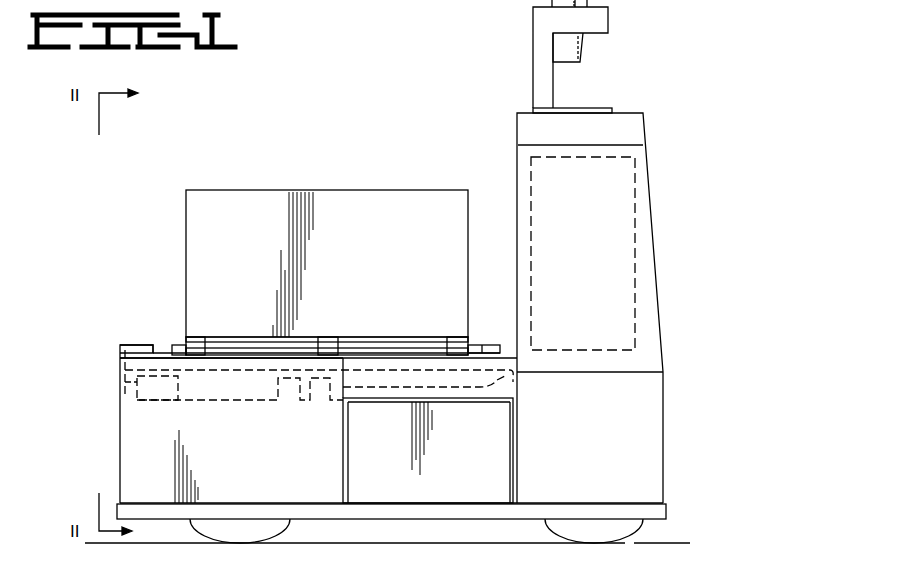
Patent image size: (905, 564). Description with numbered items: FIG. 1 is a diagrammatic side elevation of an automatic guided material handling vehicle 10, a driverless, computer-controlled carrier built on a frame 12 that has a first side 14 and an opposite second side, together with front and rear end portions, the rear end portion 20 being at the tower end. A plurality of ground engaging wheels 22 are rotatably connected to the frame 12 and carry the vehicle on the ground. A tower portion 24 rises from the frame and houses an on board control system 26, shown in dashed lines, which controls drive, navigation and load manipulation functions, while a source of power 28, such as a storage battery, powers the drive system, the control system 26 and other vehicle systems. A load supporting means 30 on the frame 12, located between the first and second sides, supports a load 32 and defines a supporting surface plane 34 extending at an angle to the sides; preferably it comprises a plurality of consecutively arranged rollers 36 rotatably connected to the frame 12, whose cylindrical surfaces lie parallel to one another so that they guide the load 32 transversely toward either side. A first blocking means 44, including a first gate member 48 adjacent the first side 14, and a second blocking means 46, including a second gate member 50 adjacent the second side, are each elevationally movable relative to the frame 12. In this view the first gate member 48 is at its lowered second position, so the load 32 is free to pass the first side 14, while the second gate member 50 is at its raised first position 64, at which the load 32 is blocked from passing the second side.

The material handling vehicle 10 is at (647, 48).
The frame 12 is at (652, 491).
The first side 14 is at (268, 473).
The rear end portion 20 is at (120, 456).
The ground engaging wheels 22 is at (600, 525).
The tower portion 24 is at (647, 233).
The on board control system 26 is at (636, 188).
The source of power 28 is at (392, 459).
The load supporting means 30 is at (141, 348).
The load 32 is at (394, 271).
The supporting surface plane 34 is at (173, 348).
The rollers 36 is at (485, 357).
The first blocking means 44 is at (183, 407).
The second blocking means 46 is at (180, 343).
The first gate member 48 is at (483, 388).
The second gate member 50 is at (470, 344).
The first position 64 is at (150, 352).